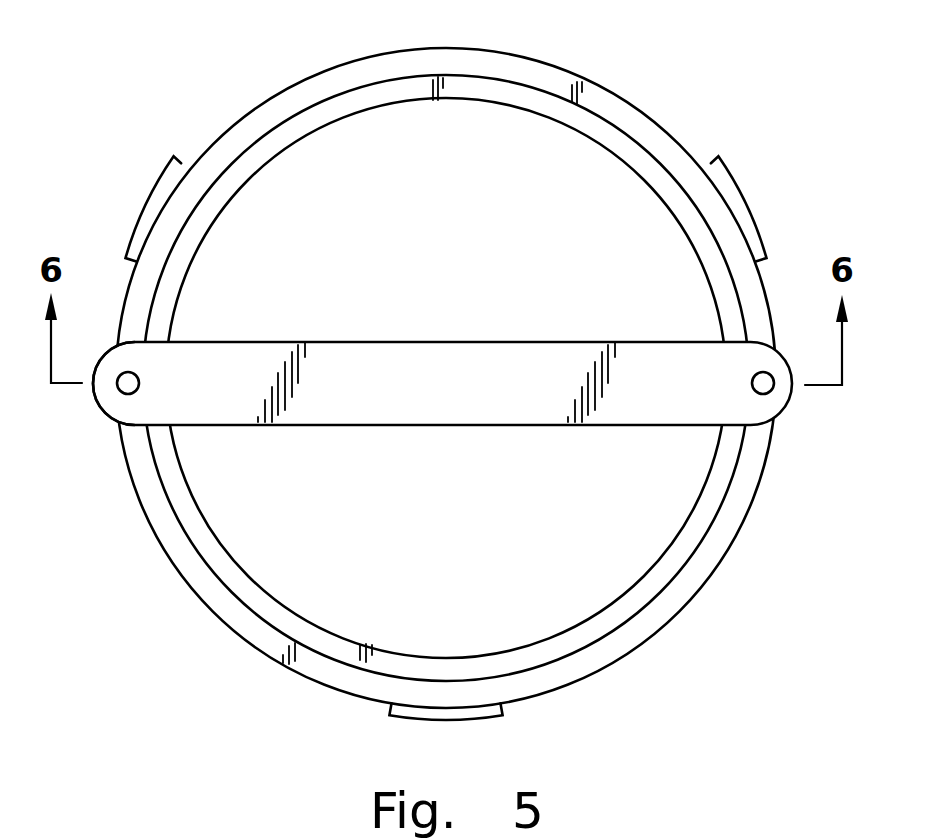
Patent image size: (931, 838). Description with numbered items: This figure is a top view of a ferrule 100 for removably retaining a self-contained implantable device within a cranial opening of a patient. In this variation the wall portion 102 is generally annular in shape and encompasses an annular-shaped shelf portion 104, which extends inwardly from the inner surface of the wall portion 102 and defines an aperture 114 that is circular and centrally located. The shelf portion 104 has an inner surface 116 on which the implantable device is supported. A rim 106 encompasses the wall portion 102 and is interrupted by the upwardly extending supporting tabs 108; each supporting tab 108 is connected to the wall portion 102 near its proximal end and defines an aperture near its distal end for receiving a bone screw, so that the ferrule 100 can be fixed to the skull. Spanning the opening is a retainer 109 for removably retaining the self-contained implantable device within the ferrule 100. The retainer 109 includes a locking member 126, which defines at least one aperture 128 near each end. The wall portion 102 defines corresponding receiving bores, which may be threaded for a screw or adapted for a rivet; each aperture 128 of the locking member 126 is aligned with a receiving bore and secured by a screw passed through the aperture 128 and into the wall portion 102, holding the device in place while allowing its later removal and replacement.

The ferrule 100 is at (212, 97).
The wall portion 102 is at (198, 598).
The shelf portion 104 is at (197, 528).
The rim 106 is at (125, 462).
The supporting tab 108 is at (175, 178).
The retainer 109 is at (460, 330).
The aperture 114 is at (277, 600).
The inner surface 116 is at (335, 645).
The locking member 126 is at (132, 365).
The aperture 128 is at (119, 390).